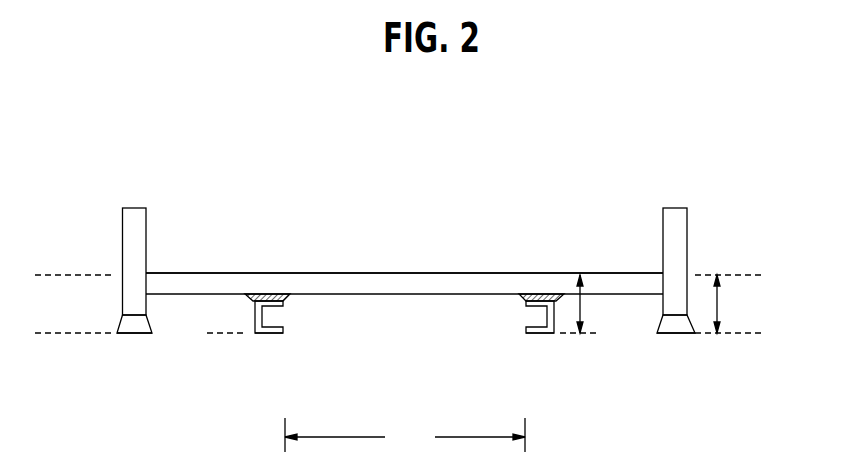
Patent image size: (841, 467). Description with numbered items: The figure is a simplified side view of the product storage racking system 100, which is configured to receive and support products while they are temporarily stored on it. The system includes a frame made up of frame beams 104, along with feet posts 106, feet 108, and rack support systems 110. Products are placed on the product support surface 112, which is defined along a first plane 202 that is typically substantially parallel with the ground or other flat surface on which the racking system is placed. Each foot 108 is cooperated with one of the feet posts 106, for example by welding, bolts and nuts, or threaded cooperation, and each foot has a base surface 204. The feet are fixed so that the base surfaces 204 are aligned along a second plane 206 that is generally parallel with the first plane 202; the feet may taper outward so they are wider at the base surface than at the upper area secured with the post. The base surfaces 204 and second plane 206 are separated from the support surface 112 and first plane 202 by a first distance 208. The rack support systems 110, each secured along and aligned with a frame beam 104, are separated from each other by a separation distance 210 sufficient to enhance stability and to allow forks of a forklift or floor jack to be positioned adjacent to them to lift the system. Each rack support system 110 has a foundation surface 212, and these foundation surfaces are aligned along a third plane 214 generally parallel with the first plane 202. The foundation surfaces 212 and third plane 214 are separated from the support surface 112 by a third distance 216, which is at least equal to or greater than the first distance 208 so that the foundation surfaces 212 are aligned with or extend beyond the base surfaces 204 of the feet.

The product storage racking system 100 is at (521, 131).
The frame beam 104 is at (287, 283).
The feet post 106 is at (131, 218).
The foot 108 is at (125, 327).
The rack support system 110 is at (260, 335).
The product support surface 112 is at (224, 260).
The first plane 202 is at (416, 277).
The base surface 204 is at (137, 353).
The second plane 206 is at (416, 336).
The first distance 208 is at (720, 303).
The separation distance 210 is at (405, 435).
The foundation surface 212 is at (277, 351).
The third plane 214 is at (401, 335).
The third distance 216 is at (583, 308).